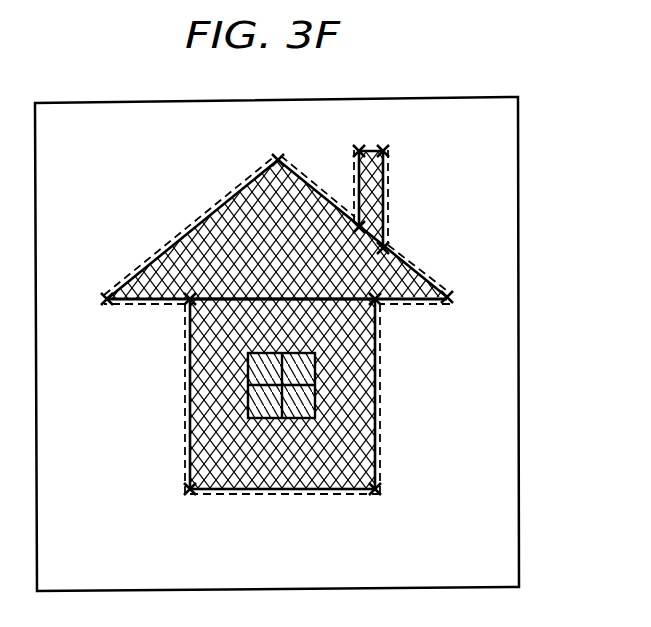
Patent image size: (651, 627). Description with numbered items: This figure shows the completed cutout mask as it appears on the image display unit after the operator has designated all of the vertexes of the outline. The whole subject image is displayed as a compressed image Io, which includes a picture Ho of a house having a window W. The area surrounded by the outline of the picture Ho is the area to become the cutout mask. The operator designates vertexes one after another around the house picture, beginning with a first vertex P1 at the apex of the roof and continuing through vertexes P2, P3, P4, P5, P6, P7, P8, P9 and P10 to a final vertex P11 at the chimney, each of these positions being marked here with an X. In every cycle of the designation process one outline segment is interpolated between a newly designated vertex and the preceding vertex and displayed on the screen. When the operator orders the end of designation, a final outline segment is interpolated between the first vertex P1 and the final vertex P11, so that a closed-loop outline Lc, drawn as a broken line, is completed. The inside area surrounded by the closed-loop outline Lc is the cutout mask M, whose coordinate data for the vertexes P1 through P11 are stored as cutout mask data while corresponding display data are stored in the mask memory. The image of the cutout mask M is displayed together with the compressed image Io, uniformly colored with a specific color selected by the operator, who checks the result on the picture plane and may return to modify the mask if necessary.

The first vertex P1 is at (274, 157).
The vertex P2 is at (104, 298).
The vertex P3 is at (187, 302).
The vertex P4 is at (191, 490).
The vertex P5 is at (377, 490).
The vertex P6 is at (378, 300).
The vertex P7 is at (448, 297).
The vertex P8 is at (384, 248).
The vertex P9 is at (384, 150).
The vertex P10 is at (359, 150).
The final vertex P11 is at (360, 227).
The closed-loop outline Lc is at (146, 263).
The window W is at (262, 405).
The picture of a house Ho is at (363, 468).
The cutout mask M is at (345, 487).
The compressed image Io is at (506, 402).